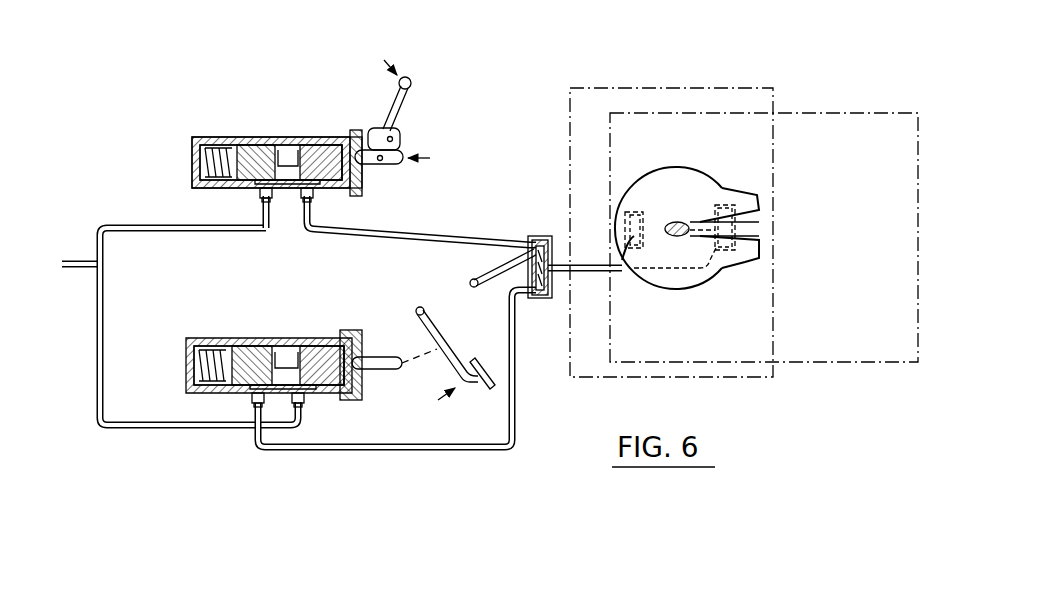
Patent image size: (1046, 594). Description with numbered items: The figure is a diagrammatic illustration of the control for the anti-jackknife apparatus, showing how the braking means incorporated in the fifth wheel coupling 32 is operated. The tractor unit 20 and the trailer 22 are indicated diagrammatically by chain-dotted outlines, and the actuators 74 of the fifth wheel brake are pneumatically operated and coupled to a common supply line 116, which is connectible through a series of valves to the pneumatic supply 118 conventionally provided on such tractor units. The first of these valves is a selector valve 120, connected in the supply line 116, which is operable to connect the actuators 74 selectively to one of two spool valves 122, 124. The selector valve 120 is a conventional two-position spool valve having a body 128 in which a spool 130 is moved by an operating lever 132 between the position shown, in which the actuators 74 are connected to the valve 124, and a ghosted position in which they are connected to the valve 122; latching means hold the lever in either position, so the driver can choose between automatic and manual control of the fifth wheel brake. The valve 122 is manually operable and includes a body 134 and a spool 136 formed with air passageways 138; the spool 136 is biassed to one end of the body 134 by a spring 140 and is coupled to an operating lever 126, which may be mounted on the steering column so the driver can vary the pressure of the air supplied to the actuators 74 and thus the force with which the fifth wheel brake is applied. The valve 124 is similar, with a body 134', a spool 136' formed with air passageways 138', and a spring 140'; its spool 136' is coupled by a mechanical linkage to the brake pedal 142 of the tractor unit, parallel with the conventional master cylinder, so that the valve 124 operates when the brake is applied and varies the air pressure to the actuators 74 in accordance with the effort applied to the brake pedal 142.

The tractor unit 20 is at (736, 90).
The trailer 22 is at (856, 120).
The fifth wheel 32 is at (684, 292).
The actuators 74 is at (716, 205).
The supply line 116 is at (566, 303).
The supply 118 is at (60, 262).
The selector valve 120 is at (526, 206).
The spool valve 122 is at (258, 100).
The spool valve 124 is at (207, 444).
The operating lever 126 is at (412, 82).
The body 128 is at (532, 242).
The spool 130 is at (530, 252).
The operating lever 132 is at (480, 287).
The body 134 is at (277, 140).
The spool 136 is at (289, 132).
The air passageways 138 is at (255, 195).
The spring 140 is at (172, 159).
The brake pedal 142 is at (416, 310).
The body 134' is at (274, 339).
The spool 136' is at (247, 383).
The air passageways 138' is at (310, 398).
The spring 140' is at (167, 364).